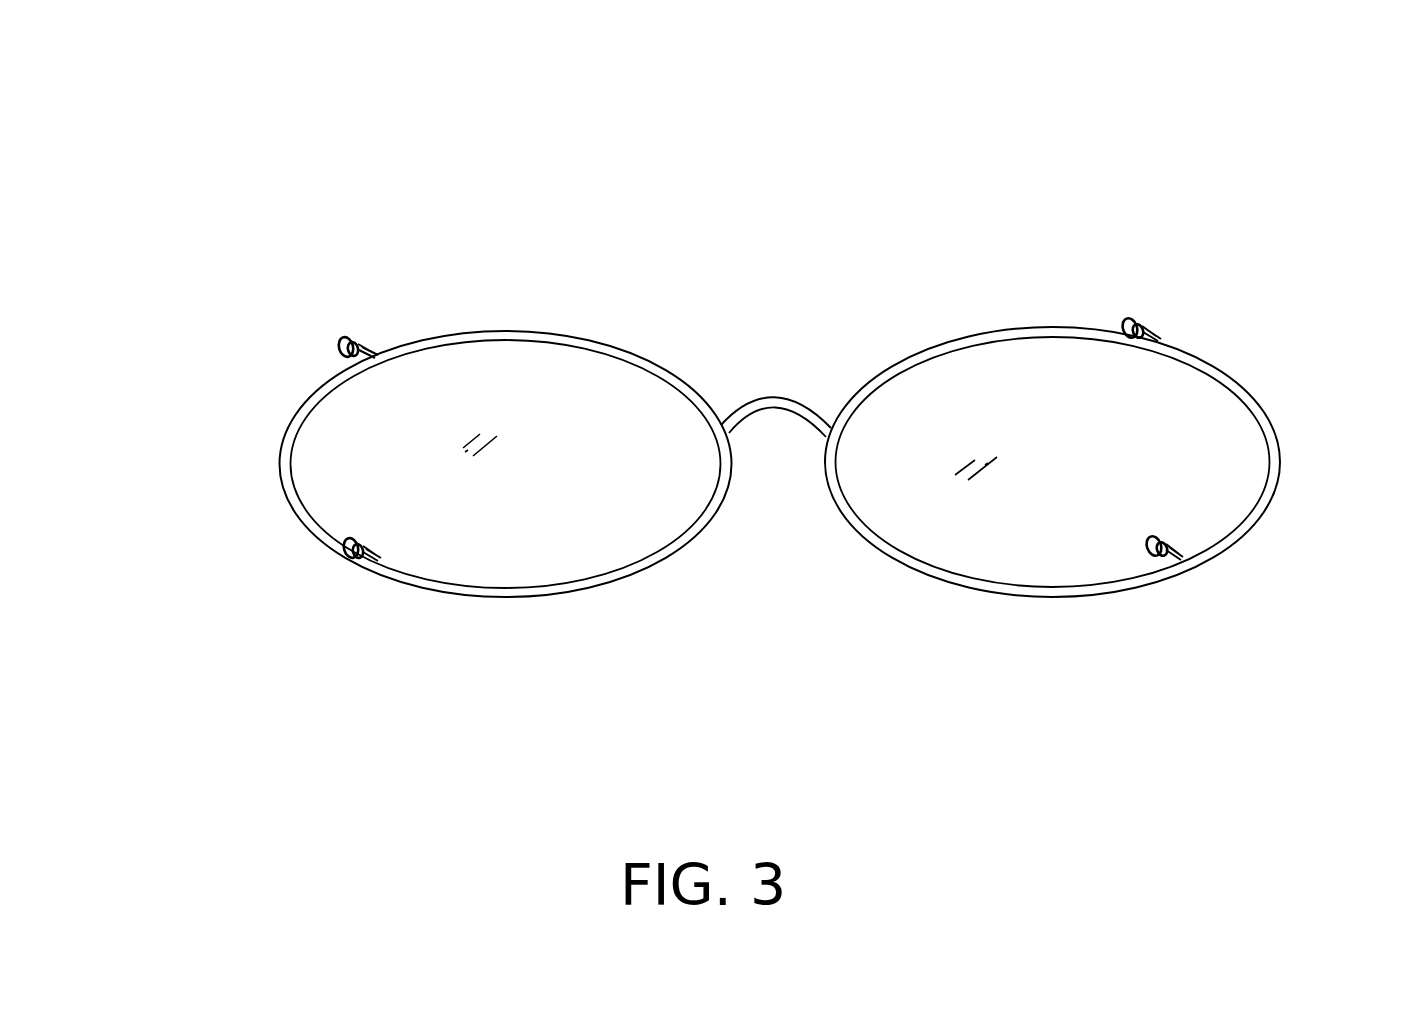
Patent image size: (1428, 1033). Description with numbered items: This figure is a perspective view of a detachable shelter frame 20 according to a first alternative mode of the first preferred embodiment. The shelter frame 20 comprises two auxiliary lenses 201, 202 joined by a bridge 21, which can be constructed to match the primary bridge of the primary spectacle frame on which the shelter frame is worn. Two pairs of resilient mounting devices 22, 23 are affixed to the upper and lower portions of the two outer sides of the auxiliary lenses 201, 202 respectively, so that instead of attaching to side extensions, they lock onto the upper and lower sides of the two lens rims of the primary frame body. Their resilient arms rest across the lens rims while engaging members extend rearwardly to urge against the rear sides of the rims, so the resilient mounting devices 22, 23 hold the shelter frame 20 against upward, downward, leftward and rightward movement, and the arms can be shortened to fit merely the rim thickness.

The detachable shelter frame 20 is at (752, 390).
The bridge 21 is at (792, 376).
The resilient mounting device 22 is at (429, 461).
The resilient mounting device 23 is at (1086, 459).
The auxiliary lens 201 is at (418, 464).
The auxiliary lens 202 is at (1112, 462).